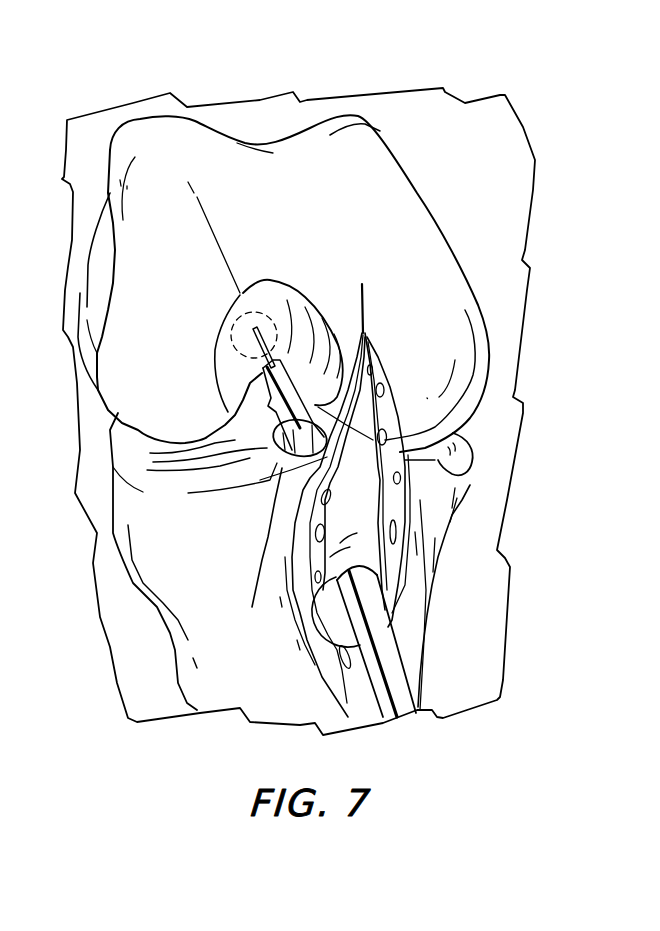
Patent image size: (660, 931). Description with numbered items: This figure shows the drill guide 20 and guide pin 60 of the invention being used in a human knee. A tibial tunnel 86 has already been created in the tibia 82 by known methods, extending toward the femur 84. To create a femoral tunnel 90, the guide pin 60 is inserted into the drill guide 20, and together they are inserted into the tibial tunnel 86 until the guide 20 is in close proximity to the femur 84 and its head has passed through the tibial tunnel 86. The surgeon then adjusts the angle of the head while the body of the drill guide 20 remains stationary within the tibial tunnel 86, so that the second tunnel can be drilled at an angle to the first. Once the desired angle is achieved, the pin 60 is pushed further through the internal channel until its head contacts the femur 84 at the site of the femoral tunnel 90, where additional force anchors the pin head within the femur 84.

The drill guide 20 is at (400, 663).
The guide pin 60 is at (252, 337).
The tibia 82 is at (148, 548).
The femur 84 is at (146, 148).
The tibial tunnel 86 is at (340, 597).
The femoral tunnel 90 is at (262, 312).